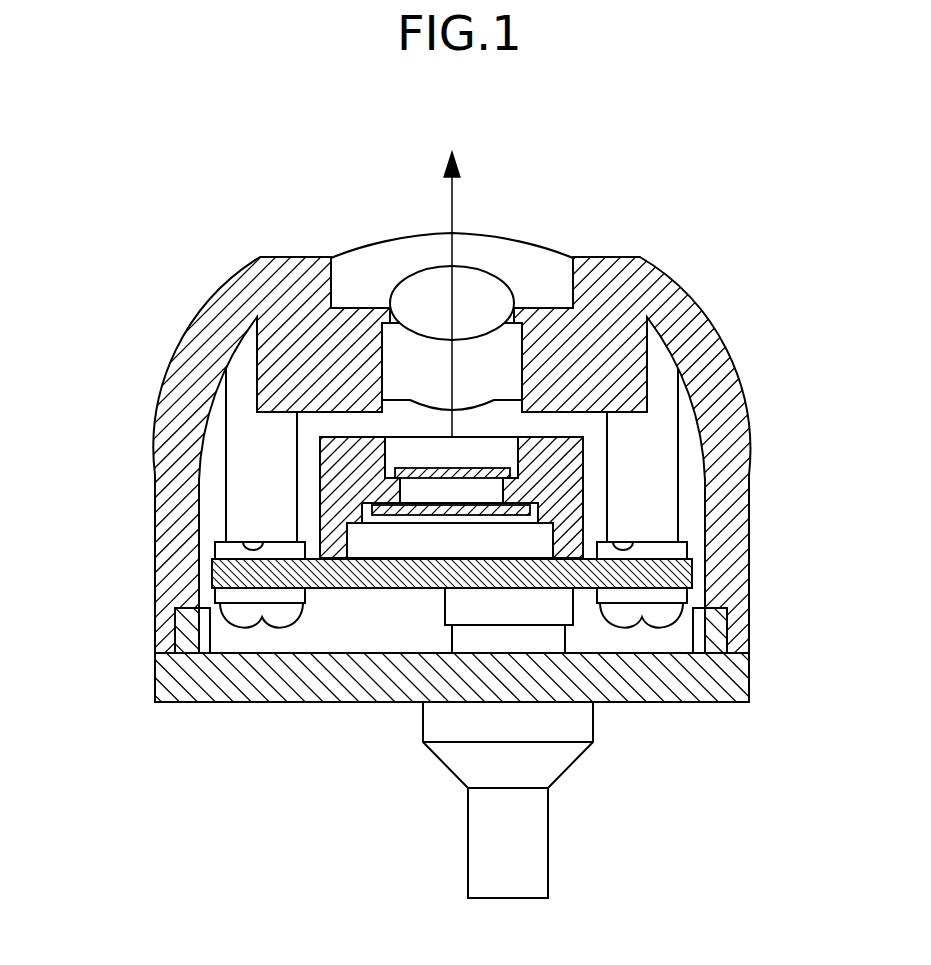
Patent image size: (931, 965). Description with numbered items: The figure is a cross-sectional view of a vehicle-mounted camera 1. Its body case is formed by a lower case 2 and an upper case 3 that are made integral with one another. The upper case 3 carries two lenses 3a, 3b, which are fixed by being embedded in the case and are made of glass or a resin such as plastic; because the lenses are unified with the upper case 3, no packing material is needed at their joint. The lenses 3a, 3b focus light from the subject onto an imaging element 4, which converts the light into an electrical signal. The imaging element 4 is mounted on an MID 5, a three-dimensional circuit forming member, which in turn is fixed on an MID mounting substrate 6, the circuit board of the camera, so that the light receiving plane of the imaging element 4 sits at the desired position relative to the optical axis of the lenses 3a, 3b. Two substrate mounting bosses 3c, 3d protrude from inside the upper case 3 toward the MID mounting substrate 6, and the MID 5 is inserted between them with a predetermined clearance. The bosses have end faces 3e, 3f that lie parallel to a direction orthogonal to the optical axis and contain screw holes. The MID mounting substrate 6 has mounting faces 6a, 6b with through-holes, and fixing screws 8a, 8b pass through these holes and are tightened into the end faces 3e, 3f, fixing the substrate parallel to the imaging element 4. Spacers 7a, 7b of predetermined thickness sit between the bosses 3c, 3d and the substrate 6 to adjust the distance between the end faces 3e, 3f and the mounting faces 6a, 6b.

The vehicle-mounted camera 1 is at (655, 170).
The lower case 2 is at (722, 703).
The upper case 3 is at (742, 385).
The lens 3a is at (482, 235).
The lens 3b is at (480, 333).
The substrate mounting boss 3c is at (680, 463).
The substrate mounting boss 3d is at (224, 473).
The end face 3e is at (643, 541).
The end face 3f is at (253, 548).
The imaging element 4 is at (415, 513).
The MID 5 is at (320, 458).
The MID mounting substrate 6 is at (423, 588).
The mounting face 6a is at (688, 597).
The mounting face 6b is at (228, 606).
The spacer 7a is at (690, 552).
The spacer 7b is at (212, 554).
The fixing screw 8a is at (617, 628).
The fixing screw 8b is at (246, 626).